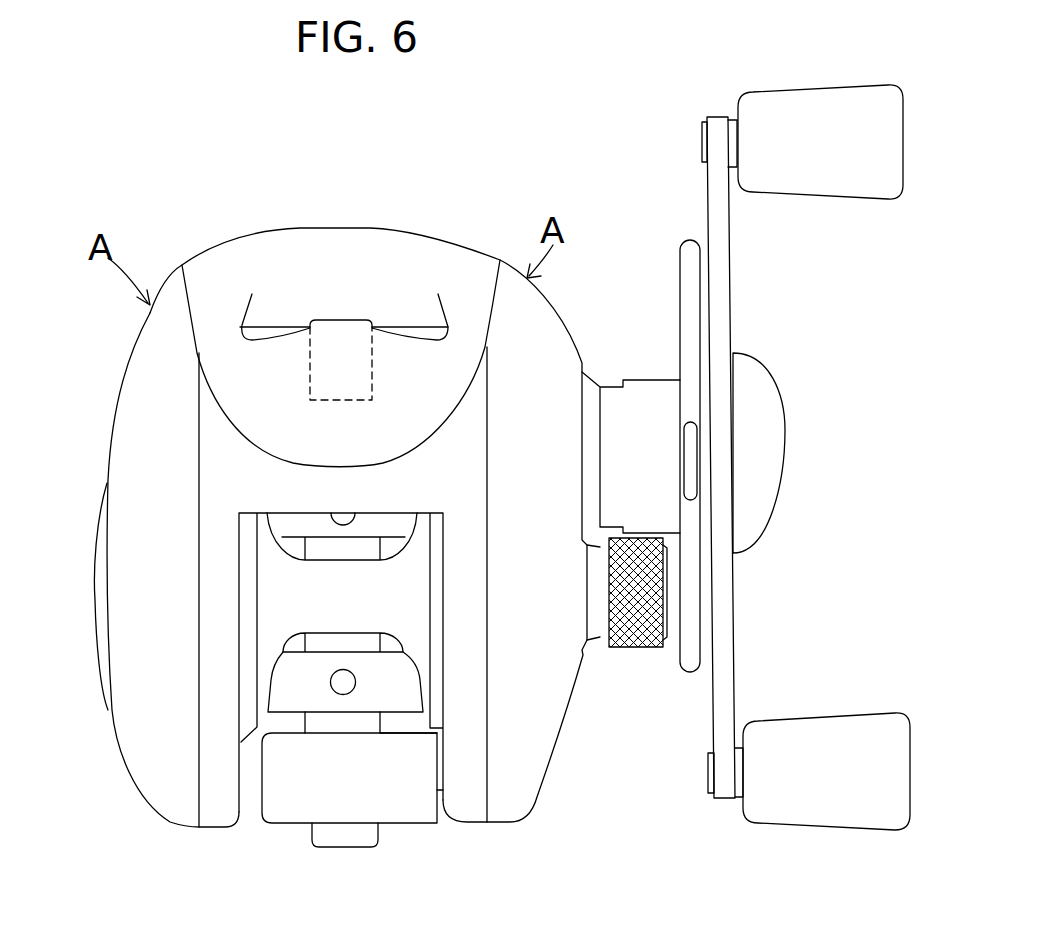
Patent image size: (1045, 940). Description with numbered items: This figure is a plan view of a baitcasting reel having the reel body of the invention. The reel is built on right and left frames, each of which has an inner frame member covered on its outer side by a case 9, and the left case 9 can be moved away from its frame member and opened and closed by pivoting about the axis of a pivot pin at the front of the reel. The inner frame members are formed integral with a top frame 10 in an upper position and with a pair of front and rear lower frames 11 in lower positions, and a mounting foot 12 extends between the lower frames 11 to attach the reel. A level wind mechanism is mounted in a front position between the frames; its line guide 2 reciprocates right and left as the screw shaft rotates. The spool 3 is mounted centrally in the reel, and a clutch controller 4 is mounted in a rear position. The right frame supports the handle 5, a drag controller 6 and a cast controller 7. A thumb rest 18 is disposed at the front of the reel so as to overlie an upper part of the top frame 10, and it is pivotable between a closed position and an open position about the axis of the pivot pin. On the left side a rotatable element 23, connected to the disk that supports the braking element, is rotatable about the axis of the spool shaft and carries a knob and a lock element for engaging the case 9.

The line guide 2 is at (372, 367).
The spool 3 is at (297, 607).
The clutch controller 4 is at (283, 808).
The handle 5 is at (725, 298).
The drag controller 6 is at (683, 262).
The cast controller 7 is at (633, 647).
The case 9 is at (133, 385).
The top frame 10 is at (278, 495).
The lower frame 11 is at (292, 698).
The mounting foot 12 is at (360, 720).
The thumb rest 18 is at (423, 245).
The rotatable element 23 is at (100, 537).